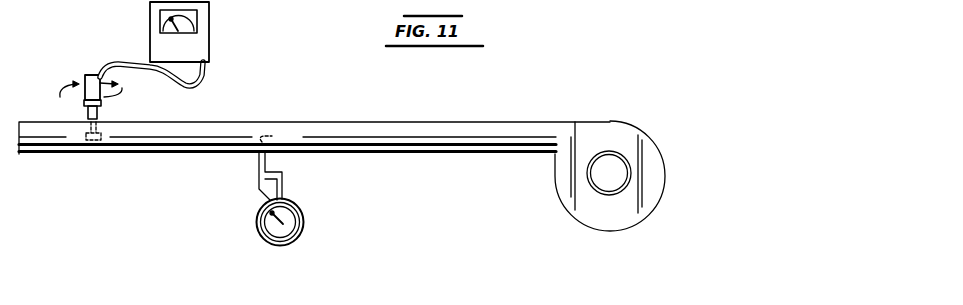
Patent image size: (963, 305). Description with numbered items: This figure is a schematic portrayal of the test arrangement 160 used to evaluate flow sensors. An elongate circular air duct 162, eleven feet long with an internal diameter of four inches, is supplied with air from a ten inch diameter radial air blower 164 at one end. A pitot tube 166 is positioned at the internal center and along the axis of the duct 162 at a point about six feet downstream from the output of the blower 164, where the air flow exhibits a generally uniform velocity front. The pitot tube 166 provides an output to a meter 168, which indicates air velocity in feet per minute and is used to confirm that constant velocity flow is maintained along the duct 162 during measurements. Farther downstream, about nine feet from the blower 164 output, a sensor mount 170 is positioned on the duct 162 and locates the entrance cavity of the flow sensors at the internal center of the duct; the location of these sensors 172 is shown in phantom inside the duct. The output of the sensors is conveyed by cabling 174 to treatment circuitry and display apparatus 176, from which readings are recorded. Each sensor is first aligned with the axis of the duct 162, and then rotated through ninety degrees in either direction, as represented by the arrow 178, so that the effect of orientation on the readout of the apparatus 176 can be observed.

The test arrangement 160 is at (611, 52).
The air duct 162 is at (372, 121).
The radial air blower 164 is at (597, 230).
The pitot tube 166 is at (257, 177).
The meter 168 is at (304, 220).
The sensor mount 170 is at (88, 76).
The flow sensors 172 is at (104, 137).
The cabling 174 is at (118, 64).
The treatment circuitry and display apparatus 176 is at (209, 26).
The arrow 178 is at (59, 96).